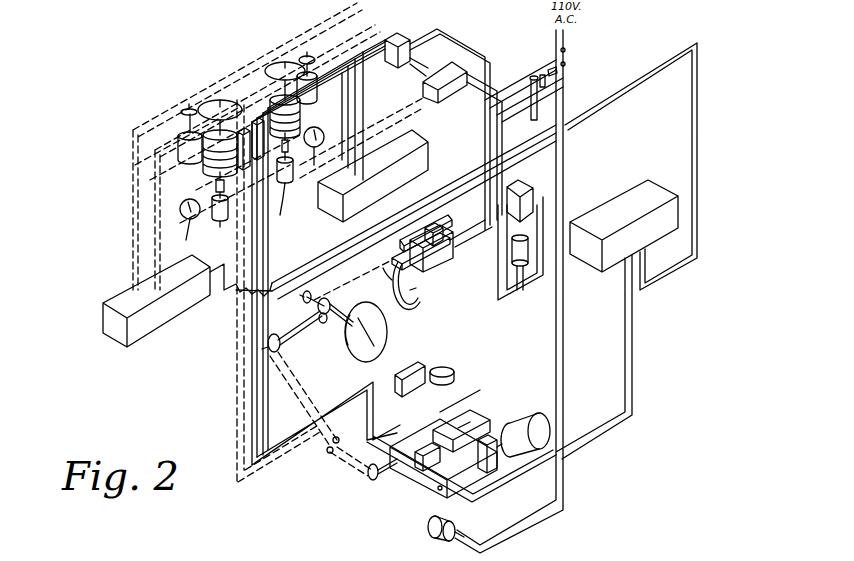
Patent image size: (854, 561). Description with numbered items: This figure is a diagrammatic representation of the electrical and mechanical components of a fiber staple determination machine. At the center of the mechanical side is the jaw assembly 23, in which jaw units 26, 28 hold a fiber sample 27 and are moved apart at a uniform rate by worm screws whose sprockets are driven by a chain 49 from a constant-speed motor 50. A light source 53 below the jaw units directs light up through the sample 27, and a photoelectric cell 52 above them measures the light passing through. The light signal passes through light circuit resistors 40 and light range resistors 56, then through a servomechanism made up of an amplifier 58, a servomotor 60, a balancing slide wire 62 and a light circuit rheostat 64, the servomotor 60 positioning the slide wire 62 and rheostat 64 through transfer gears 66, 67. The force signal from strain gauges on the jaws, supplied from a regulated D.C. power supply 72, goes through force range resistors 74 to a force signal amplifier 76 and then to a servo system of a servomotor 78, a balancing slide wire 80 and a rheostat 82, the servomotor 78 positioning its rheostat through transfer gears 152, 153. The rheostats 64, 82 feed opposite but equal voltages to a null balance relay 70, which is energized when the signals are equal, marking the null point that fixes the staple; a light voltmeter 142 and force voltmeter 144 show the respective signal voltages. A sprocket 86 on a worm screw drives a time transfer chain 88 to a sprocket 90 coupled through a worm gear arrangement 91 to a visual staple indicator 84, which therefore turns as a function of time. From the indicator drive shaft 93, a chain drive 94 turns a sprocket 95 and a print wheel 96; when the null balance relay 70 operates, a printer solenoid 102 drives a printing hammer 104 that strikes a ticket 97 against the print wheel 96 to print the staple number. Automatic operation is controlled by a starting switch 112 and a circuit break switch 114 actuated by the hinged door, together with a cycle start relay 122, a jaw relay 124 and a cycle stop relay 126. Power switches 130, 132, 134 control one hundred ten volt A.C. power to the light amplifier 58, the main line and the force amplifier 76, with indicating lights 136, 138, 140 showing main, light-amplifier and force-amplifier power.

The jaw assembly 23 is at (392, 476).
The jaw unit 26 is at (426, 478).
The fiber sample 27 is at (440, 430).
The jaw unit 28 is at (486, 434).
The light circuit resistors 40 is at (408, 364).
The chain 49 is at (500, 442).
The motor 50 is at (550, 430).
The photoelectric cell 52 is at (456, 376).
The light source 53 is at (428, 530).
The light range resistors 56 is at (242, 128).
The amplifier 58 is at (112, 300).
The servomotor 60 is at (178, 136).
The balancing slide wire 62 is at (216, 174).
The light circuit rheostat 64 is at (216, 226).
The transfer gear 66 is at (184, 109).
The transfer gear 67 is at (216, 102).
The null balance relay 70 is at (453, 86).
The regulated D.C. power supply 72 is at (636, 186).
The force range resistors 74 is at (259, 118).
The force signal amplifier 76 is at (424, 143).
The servomotor 78 is at (314, 73).
The balancing slide wire 80 is at (314, 130).
The rheostat 82 is at (281, 214).
The visual staple indicator 84 is at (348, 348).
The sprocket 86 is at (368, 478).
The time transfer chain 88 is at (292, 404).
The sprocket 90 is at (272, 334).
The worm gear arrangement 91 is at (323, 322).
The drive shaft 93 is at (332, 305).
The chain drive 94 is at (340, 290).
The sprocket 95 is at (396, 280).
The print wheel 96 is at (422, 296).
The ticket 97 is at (440, 268).
The printer solenoid 102 is at (454, 254).
The printing hammer 104 is at (436, 216).
The starting switch 112 is at (505, 300).
The circuit break switch 114 is at (444, 232).
The cycle start relay 122 is at (514, 250).
The jaw relay 124 is at (507, 186).
The cycle stop relay 126 is at (402, 32).
The power switch 130 is at (568, 90).
The power switch 132 is at (565, 50).
The power switch 134 is at (565, 65).
The indicating light 136 is at (552, 68).
The indicating light 138 is at (532, 82).
The indicating light 140 is at (542, 74).
The light voltmeter 142 is at (184, 222).
The force voltmeter 144 is at (294, 180).
The transfer gear 152 is at (276, 64).
The transfer gear 153 is at (304, 58).